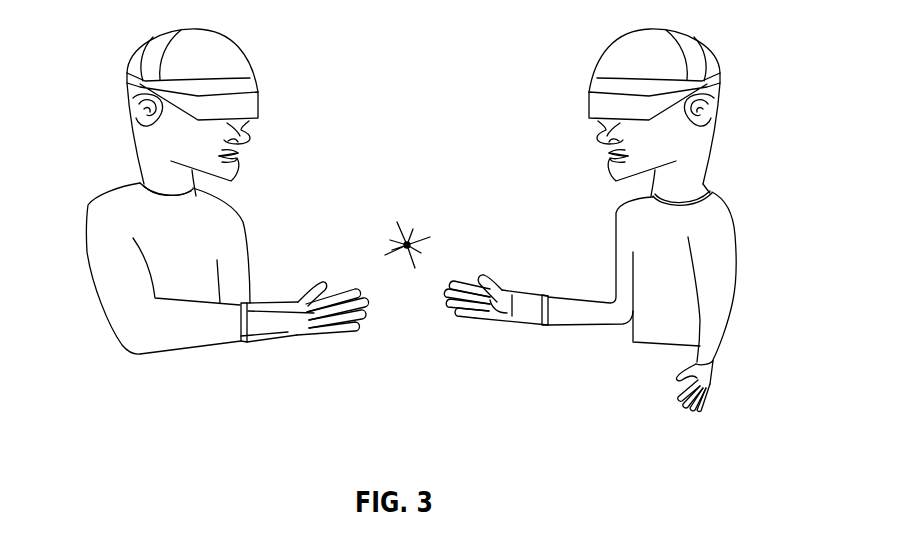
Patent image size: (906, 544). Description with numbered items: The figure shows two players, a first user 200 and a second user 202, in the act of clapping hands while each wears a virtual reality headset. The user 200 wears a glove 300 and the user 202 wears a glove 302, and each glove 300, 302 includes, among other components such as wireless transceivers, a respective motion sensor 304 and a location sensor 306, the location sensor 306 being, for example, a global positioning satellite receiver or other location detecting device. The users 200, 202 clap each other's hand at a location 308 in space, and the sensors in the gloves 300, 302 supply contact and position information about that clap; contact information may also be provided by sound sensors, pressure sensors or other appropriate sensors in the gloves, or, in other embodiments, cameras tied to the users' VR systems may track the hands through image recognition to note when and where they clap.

The first user 200 is at (87, 252).
The second user 202 is at (735, 250).
The glove 300 is at (258, 338).
The glove 302 is at (505, 311).
The motion sensor 304 is at (479, 277).
The location sensor 306 is at (470, 318).
The location 308 is at (412, 237).